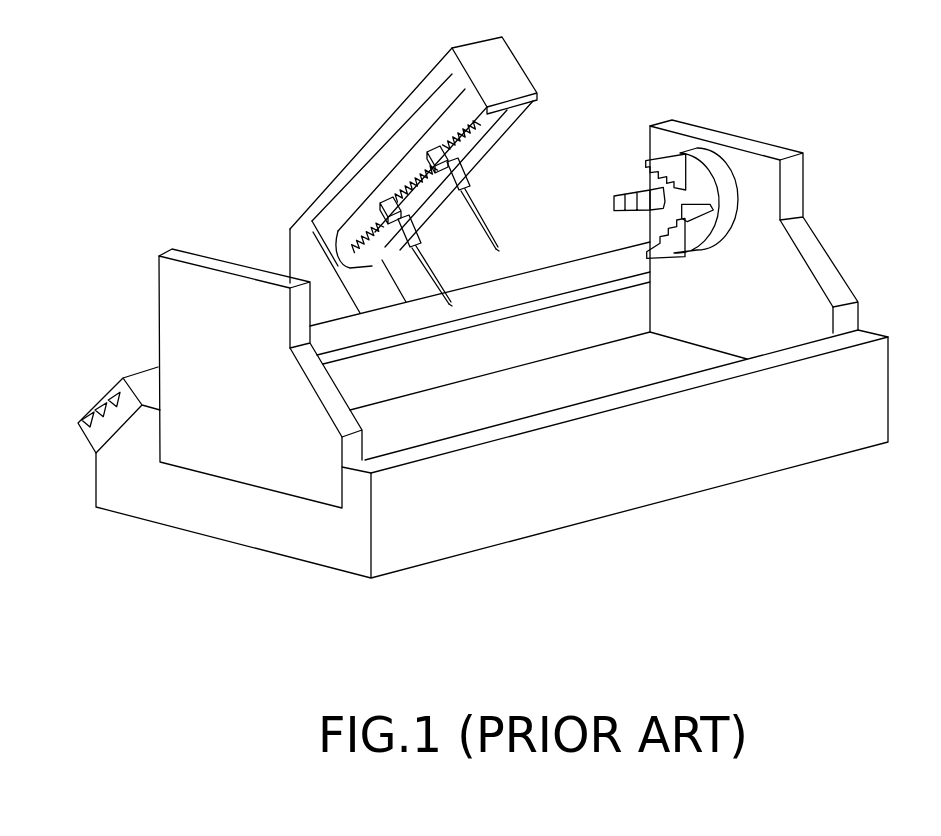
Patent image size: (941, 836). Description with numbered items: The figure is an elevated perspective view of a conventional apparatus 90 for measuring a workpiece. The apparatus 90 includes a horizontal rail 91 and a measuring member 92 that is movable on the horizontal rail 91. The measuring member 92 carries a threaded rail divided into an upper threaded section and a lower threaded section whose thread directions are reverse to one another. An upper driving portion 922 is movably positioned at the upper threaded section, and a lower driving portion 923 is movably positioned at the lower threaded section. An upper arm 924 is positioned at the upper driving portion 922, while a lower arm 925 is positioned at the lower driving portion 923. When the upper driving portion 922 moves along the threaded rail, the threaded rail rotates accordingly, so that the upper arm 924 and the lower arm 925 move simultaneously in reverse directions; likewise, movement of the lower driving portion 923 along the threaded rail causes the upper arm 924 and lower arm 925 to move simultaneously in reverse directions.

The conventional apparatus 90 is at (865, 182).
The horizontal rail 91 is at (103, 418).
The measuring member 92 is at (357, 165).
The upper driving portion 922 is at (434, 150).
The lower driving portion 923 is at (388, 208).
The upper arm 924 is at (490, 212).
The lower arm 925 is at (427, 268).